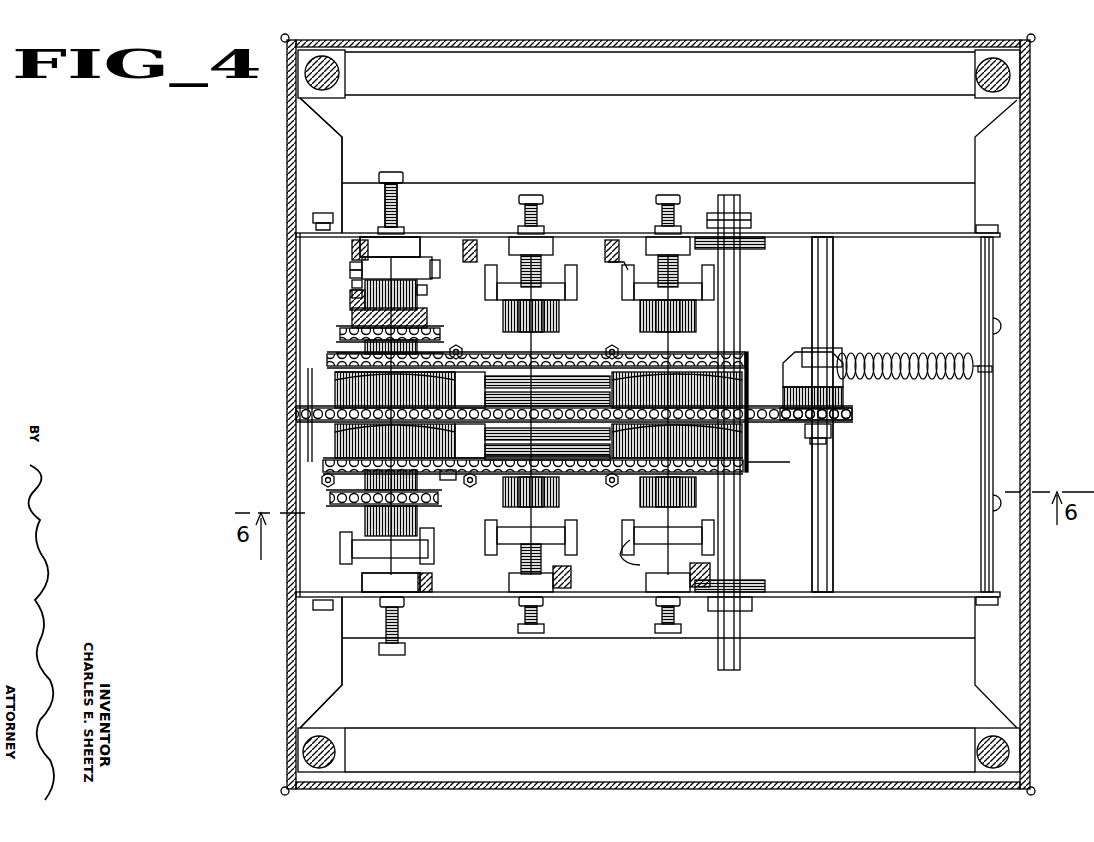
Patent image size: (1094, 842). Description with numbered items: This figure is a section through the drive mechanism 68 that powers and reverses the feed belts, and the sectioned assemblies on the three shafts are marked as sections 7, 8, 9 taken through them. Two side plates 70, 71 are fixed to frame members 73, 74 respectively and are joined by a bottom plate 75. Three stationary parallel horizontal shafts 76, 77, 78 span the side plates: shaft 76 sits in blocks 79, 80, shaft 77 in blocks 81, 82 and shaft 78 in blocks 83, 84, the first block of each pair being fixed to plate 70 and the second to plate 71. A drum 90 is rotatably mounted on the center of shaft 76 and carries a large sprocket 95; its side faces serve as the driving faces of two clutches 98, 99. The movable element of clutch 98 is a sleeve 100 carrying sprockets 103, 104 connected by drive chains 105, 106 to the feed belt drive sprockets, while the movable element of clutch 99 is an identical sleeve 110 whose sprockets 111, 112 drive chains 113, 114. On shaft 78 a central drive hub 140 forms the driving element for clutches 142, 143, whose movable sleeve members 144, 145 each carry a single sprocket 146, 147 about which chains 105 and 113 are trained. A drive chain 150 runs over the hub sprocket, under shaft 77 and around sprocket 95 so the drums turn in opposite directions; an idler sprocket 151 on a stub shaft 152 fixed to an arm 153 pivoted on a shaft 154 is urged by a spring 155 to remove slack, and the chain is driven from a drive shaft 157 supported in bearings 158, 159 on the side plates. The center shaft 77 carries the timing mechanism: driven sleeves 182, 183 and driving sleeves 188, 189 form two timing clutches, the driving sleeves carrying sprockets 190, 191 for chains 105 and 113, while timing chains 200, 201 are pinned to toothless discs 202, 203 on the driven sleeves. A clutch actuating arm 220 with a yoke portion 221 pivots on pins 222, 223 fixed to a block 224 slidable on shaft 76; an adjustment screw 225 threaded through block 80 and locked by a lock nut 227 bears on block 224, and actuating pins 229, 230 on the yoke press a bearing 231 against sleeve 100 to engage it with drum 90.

The first spindle assembly 7 is at (426, 416).
The second spindle assembly 8 is at (541, 415).
The third spindle assembly 9 is at (691, 415).
The drive mechanism 68 is at (328, 390).
The side plate 70 is at (912, 594).
The side plate 71 is at (930, 236).
The frame member 73 is at (298, 632).
The frame member 74 is at (298, 203).
The bottom plate 75 is at (867, 414).
The shaft 76 is at (396, 270).
The center shaft 77 is at (545, 268).
The shaft 78 is at (628, 268).
The block 79 is at (366, 585).
The block 80 is at (414, 240).
The block 81 is at (510, 592).
The block 82 is at (540, 244).
The block 83 is at (650, 592).
The block 84 is at (662, 240).
The drum 90 is at (325, 410).
The large sprocket 95 is at (372, 420).
The clutch 98 is at (342, 368).
The clutch 99 is at (328, 458).
The sleeve 100 is at (358, 306).
The sprocket 103 is at (362, 350).
The sprocket 104 is at (358, 318).
The drive chain 105 is at (342, 353).
The drive chain 106 is at (342, 336).
The sleeve 110 is at (370, 524).
The sprocket 111 is at (395, 441).
The sprocket 112 is at (372, 512).
The chain 113 is at (342, 470).
The chain 114 is at (340, 496).
The central drive hub 140 is at (745, 382).
The clutch 142 is at (746, 366).
The clutch 143 is at (740, 454).
The movable sleeve member 144 is at (688, 335).
The movable sleeve member 145 is at (712, 490).
The sprocket 146 is at (690, 346).
The sprocket 147 is at (605, 444).
The drive chain 150 is at (855, 416).
The idler sprocket 151 is at (832, 400).
The stub shaft 152 is at (835, 433).
The arm 153 is at (835, 350).
The shaft 154 is at (825, 305).
The spring 155 is at (870, 355).
The drive shaft 157 is at (732, 198).
The bearing 158 is at (748, 608).
The bearing 159 is at (752, 232).
The sleeve 182 is at (585, 386).
The sleeve 183 is at (612, 438).
The sleeve 188 is at (553, 330).
The sleeve 189 is at (550, 498).
The sprocket 190 is at (545, 352).
The sprocket 191 is at (553, 485).
The timing chain 200 is at (595, 401).
The timing chain 201 is at (532, 441).
The toothless sprocket 202 is at (470, 337).
The toothless sprocket 203 is at (465, 470).
The clutch actuating arm 220 is at (358, 242).
The yoke portion 221 is at (350, 276).
The pivot pin 222 is at (434, 265).
The pivot pin 223 is at (350, 266).
The block 224 is at (421, 258).
The adjustment screw 225 is at (398, 175).
The lock nut 227 is at (402, 215).
The clutch actuating pin 229 is at (425, 292).
The clutch actuating pin 230 is at (356, 284).
The bearing 231 is at (356, 294).